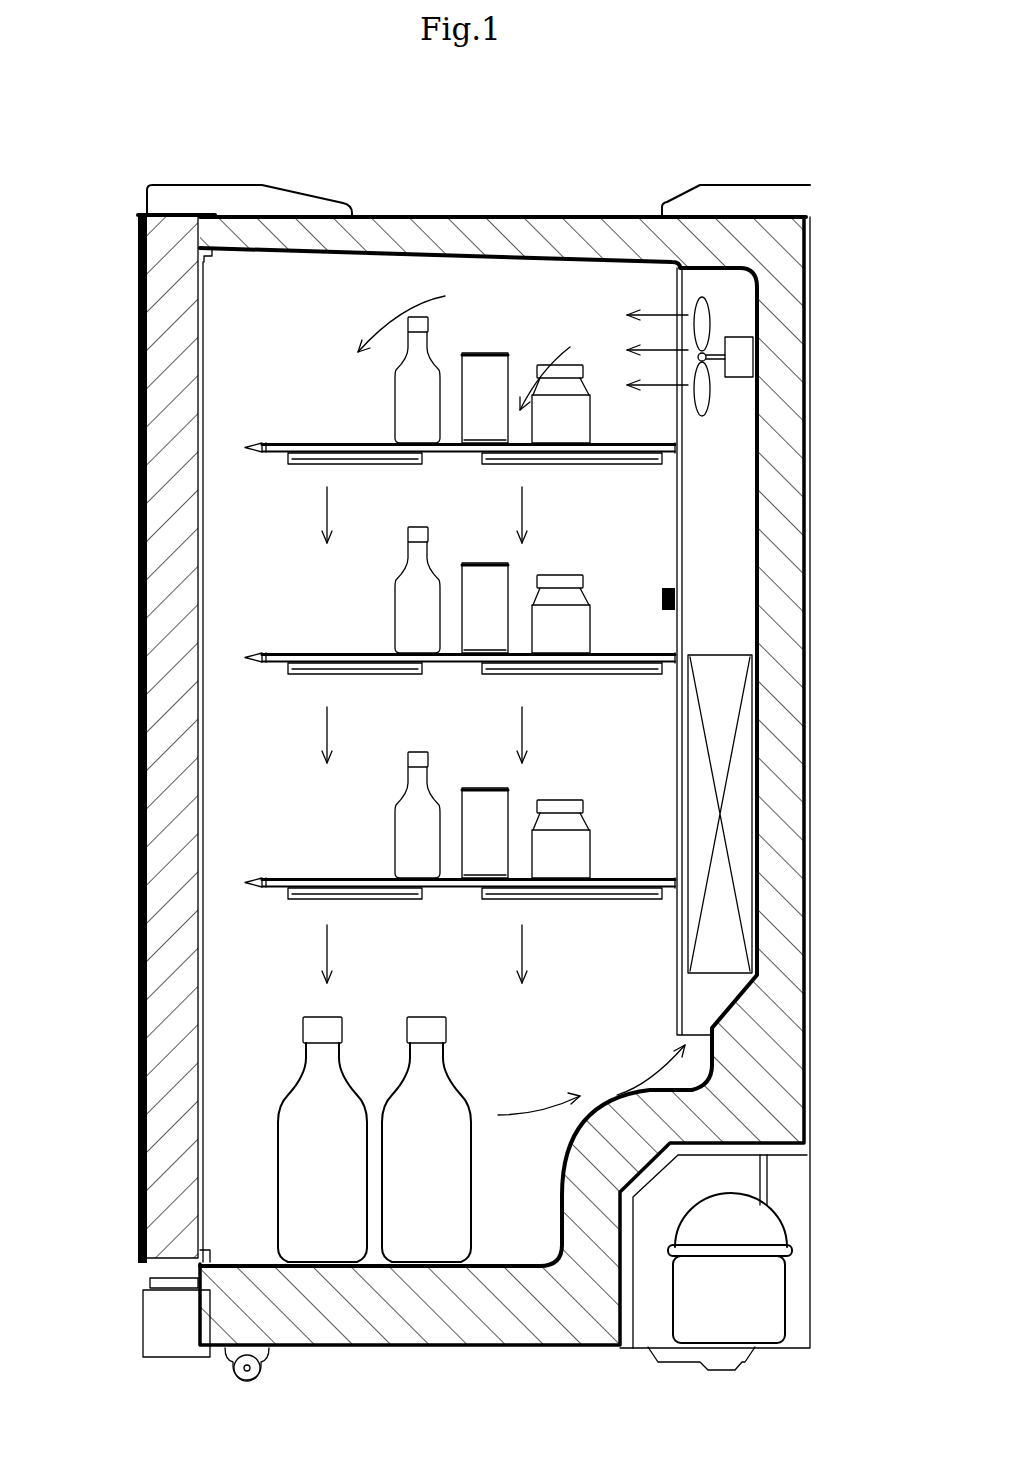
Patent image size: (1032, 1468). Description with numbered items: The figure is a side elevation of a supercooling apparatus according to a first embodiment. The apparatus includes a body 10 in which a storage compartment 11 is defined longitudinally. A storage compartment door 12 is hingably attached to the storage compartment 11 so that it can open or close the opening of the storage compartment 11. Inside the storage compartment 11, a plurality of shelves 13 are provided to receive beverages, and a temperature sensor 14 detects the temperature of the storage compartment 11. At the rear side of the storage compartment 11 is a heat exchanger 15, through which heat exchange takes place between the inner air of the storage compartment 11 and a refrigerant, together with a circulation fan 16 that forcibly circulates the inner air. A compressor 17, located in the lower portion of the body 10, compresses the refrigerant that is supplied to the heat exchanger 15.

The body 10 is at (788, 274).
The storage compartment 11 is at (312, 375).
The storage compartment door 12 is at (178, 392).
The shelves 13 is at (622, 453).
The temperature sensor 14 is at (676, 594).
The heat exchanger 15 is at (742, 733).
The circulation fan 16 is at (705, 396).
The compressor 17 is at (740, 1292).